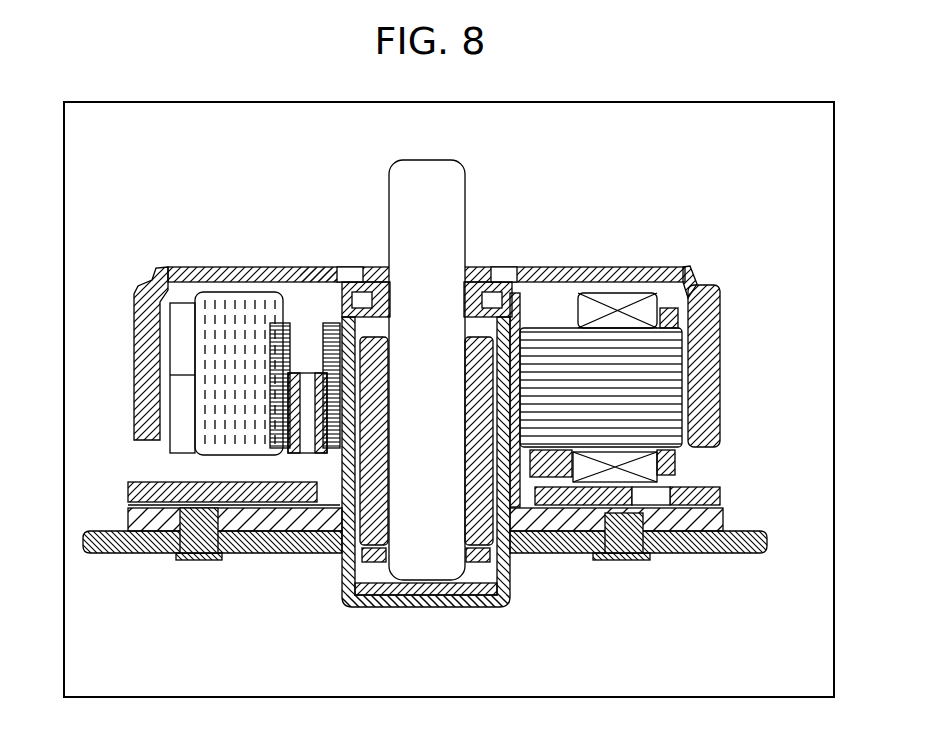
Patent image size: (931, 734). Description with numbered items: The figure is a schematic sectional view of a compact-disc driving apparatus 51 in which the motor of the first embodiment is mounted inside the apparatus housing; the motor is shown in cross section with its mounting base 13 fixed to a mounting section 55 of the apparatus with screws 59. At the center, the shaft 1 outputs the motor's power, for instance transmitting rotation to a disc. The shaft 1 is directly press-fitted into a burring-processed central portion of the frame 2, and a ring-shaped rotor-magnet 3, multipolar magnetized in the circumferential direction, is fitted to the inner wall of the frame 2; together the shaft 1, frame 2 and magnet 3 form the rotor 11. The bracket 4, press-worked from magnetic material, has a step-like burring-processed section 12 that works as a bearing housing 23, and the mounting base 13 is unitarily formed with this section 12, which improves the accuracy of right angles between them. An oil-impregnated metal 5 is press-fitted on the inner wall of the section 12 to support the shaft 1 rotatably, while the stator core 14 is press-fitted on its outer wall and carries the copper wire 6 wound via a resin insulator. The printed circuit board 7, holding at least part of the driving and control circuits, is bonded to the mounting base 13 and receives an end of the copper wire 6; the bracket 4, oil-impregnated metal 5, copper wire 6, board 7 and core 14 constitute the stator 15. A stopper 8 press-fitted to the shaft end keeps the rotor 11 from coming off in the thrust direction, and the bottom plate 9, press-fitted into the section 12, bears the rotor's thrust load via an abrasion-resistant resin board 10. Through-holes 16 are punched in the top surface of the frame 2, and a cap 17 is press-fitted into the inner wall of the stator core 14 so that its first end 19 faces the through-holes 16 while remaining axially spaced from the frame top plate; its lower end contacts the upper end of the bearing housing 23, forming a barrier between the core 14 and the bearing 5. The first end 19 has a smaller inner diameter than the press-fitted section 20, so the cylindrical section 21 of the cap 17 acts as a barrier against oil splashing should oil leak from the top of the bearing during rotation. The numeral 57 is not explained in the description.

The shaft 1 is at (448, 237).
The frame 2 is at (555, 267).
The rotor-magnet 3 is at (687, 273).
The bracket 4 is at (587, 527).
The oil-impregnated metal 5 is at (507, 553).
The copper wire 6 is at (640, 533).
The printed circuit board 7 is at (557, 503).
The stopper 8 is at (345, 583).
The bottom plate 9 is at (390, 600).
The resin board 10 is at (433, 597).
The rotor 11 is at (685, 157).
The burring-processed section 12 is at (317, 403).
The mounting base 13 is at (233, 522).
The stator core 14 is at (662, 440).
The stator 15 is at (762, 637).
The through-holes 16 is at (347, 267).
The cap 17 is at (315, 268).
The first end 19 is at (360, 267).
The section 20 is at (275, 322).
The cylindrical section 21 is at (325, 325).
The bearing housing 23 is at (513, 432).
The apparatus 51 is at (710, 102).
The mounting section 55 is at (762, 533).
The cover side wall 57 is at (708, 283).
The screws 59 is at (178, 552).